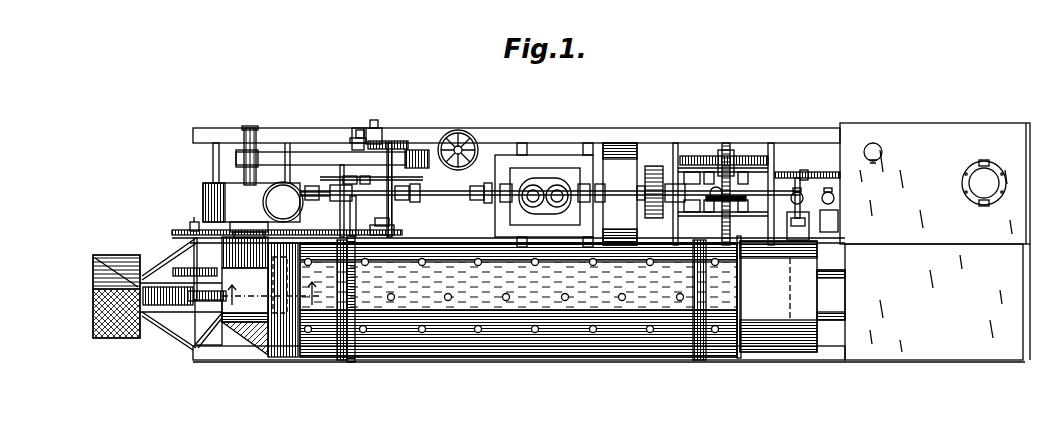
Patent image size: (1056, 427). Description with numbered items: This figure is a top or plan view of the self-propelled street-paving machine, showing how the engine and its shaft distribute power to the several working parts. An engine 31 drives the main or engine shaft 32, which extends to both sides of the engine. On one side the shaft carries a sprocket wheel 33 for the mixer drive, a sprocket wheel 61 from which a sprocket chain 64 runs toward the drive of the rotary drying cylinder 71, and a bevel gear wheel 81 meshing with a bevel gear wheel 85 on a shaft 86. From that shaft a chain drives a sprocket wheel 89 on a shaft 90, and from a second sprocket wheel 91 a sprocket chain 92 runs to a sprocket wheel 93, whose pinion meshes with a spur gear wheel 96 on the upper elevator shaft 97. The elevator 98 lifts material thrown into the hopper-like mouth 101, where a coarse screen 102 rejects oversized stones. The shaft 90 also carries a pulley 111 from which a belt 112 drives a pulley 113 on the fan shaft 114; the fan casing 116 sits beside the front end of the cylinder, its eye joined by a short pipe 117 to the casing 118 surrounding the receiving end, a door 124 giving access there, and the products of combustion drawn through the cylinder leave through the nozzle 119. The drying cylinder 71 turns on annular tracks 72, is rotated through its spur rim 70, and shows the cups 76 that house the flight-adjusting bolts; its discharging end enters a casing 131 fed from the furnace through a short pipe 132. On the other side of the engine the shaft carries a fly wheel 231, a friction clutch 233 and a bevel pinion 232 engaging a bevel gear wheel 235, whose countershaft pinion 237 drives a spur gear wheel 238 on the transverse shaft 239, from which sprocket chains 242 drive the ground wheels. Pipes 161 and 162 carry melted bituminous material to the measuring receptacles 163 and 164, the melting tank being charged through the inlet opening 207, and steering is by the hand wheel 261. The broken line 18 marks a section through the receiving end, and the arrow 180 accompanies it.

The fan shaft 114 is at (248, 127).
The pulley 113 is at (236, 154).
The belt 112 is at (305, 151).
The fan casing 116 is at (203, 187).
The nozzle 119 is at (283, 202).
The short pipe 117 is at (248, 223).
The sprocket wheel 93 is at (178, 231).
The upper elevator shaft 97 is at (193, 221).
The bevel gear wheel 85 is at (343, 181).
The sprocket chain 92 is at (322, 229).
The bevel gear wheel 81 is at (354, 141).
The shaft 86 is at (360, 130).
The shaft 90 is at (382, 128).
The sprocket wheel 89 is at (402, 141).
The pulley 111 is at (420, 150).
The hand wheel 261 is at (456, 130).
The main or engine shaft 32 is at (456, 196).
The sprocket wheel 61 is at (401, 197).
The sprocket chain 64 is at (415, 198).
The second sprocket wheel 91 is at (392, 233).
The sprocket wheel 33 is at (486, 187).
The engine 31 is at (546, 168).
The fly wheel 231 is at (618, 148).
The friction clutch 233 is at (653, 167).
The bevel pinion 232 is at (682, 204).
The spur gear wheel 238 is at (723, 192).
The spur pinion 237 is at (733, 162).
The shaft 239 is at (729, 146).
The bevel gear wheel 235 is at (746, 199).
The sprocket chains 242 is at (791, 176).
The pipe 162 is at (804, 171).
The pipe 161 is at (812, 196).
The measuring receptacle 164 is at (808, 238).
The measuring receptacle 163 is at (838, 226).
The inlet opening 207 is at (980, 192).
The rotary drying cylinder 71 is at (520, 343).
The cup 76 is at (533, 267).
The annular tracks 72 is at (340, 352).
The spur rim 70 is at (351, 362).
The casing 118 is at (268, 379).
The section line 18 is at (271, 295).
The opening 180 is at (321, 293).
The door 124 is at (240, 340).
The hopper-like mouth 101 is at (118, 256).
The coarse screen 102 is at (93, 310).
The elevator 98 is at (182, 304).
The spur gear wheel 96 is at (188, 266).
The casing 131 is at (780, 346).
The short pipe 132 is at (831, 322).